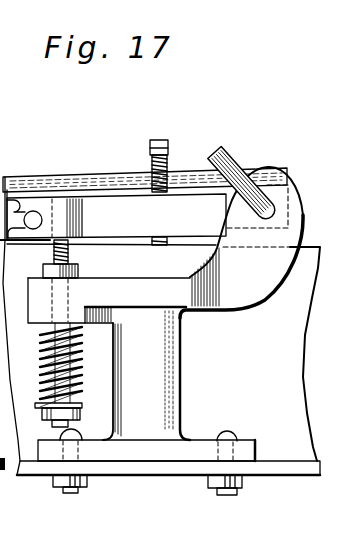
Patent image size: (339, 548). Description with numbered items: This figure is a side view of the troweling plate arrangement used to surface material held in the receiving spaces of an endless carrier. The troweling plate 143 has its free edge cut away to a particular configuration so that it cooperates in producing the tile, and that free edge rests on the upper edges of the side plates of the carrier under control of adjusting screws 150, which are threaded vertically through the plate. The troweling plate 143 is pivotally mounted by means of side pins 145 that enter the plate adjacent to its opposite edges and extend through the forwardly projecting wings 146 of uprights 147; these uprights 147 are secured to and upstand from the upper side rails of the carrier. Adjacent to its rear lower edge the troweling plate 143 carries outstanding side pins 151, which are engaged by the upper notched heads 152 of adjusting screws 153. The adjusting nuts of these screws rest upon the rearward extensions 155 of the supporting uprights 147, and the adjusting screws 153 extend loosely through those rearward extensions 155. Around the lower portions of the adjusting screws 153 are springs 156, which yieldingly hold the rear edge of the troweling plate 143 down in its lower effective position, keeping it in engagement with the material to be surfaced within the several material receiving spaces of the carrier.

The troweling plate 143 is at (72, 178).
The side pins 145 is at (232, 170).
The forwardly projecting wings 146 is at (243, 288).
The uprights 147 is at (181, 375).
The adjusting screws 150 is at (164, 146).
The outstanding side pins 151 is at (32, 225).
The notched heads 152 is at (83, 217).
The adjusting screws 153 is at (72, 255).
The rearward extensions 155 is at (42, 328).
The springs 156 is at (78, 360).